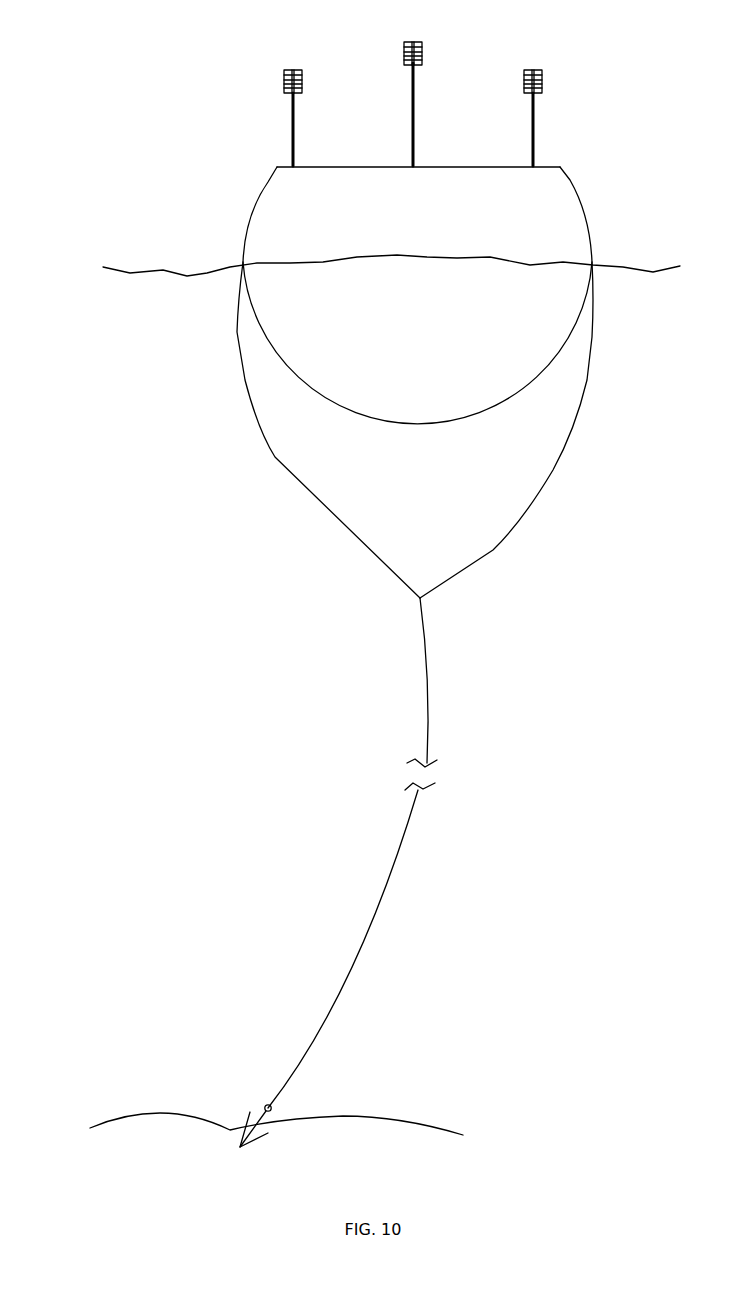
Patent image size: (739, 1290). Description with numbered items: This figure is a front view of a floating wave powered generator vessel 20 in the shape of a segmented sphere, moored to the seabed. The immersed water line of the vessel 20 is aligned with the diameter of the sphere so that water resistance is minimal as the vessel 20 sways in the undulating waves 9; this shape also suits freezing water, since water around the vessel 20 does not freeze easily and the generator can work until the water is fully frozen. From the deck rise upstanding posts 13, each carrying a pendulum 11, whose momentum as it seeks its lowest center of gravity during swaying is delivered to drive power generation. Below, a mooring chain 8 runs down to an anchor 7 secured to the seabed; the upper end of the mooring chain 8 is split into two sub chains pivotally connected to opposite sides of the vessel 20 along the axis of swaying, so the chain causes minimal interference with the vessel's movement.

The anchor 7 is at (257, 1108).
The mooring chain 8 is at (407, 888).
The undulating waves 9 is at (167, 242).
The pendulum 11 is at (403, 50).
The upstanding post 13 is at (420, 103).
The vessel 20 is at (453, 372).